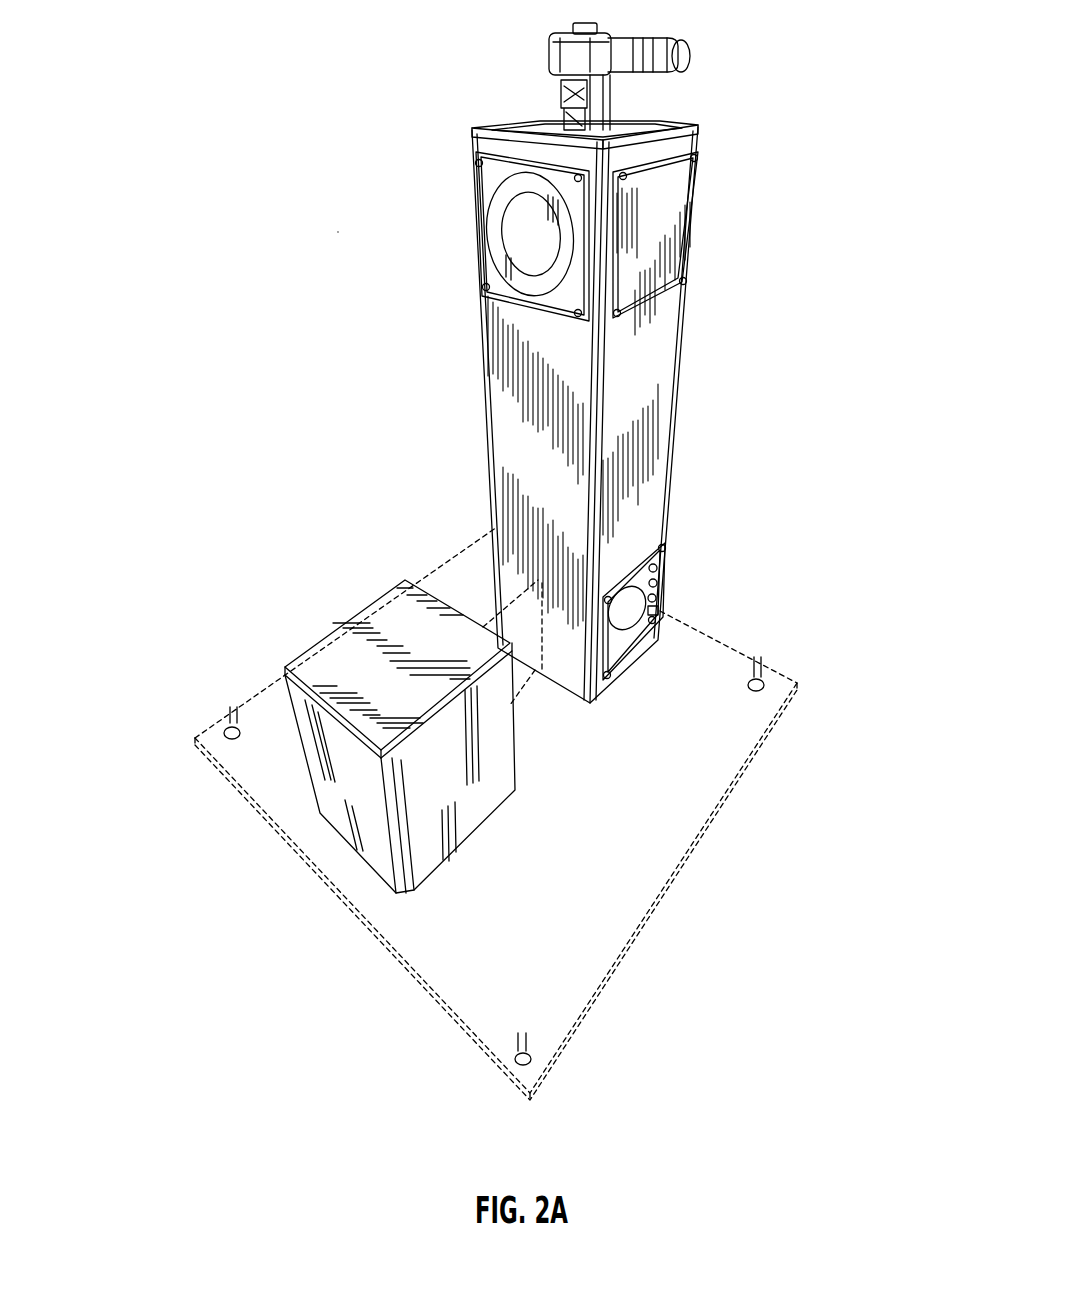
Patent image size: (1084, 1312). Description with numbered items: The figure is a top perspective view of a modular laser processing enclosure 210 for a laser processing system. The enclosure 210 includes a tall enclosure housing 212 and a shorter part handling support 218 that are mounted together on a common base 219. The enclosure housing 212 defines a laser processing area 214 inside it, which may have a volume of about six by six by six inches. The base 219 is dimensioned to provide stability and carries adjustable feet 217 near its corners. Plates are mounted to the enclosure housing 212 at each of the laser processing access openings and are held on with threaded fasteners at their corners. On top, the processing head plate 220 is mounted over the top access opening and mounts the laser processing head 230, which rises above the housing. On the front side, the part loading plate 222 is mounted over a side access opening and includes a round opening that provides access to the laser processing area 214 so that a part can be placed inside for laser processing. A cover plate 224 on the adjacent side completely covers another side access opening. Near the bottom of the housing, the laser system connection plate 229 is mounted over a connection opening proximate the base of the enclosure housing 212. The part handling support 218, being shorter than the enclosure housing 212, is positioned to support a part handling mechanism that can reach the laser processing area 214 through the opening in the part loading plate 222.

The modular laser processing enclosure 210 is at (342, 236).
The enclosure housing 212 is at (487, 430).
The laser processing area 214 is at (510, 246).
The adjustable feet 217 is at (218, 782).
The part handling support 218 is at (330, 620).
The base 219 is at (270, 681).
The processing head plate 220 is at (665, 128).
The part loading plate 222 is at (474, 172).
The cover plate 224 is at (695, 212).
The laser system connection plate 229 is at (664, 570).
The laser processing head 230 is at (560, 97).